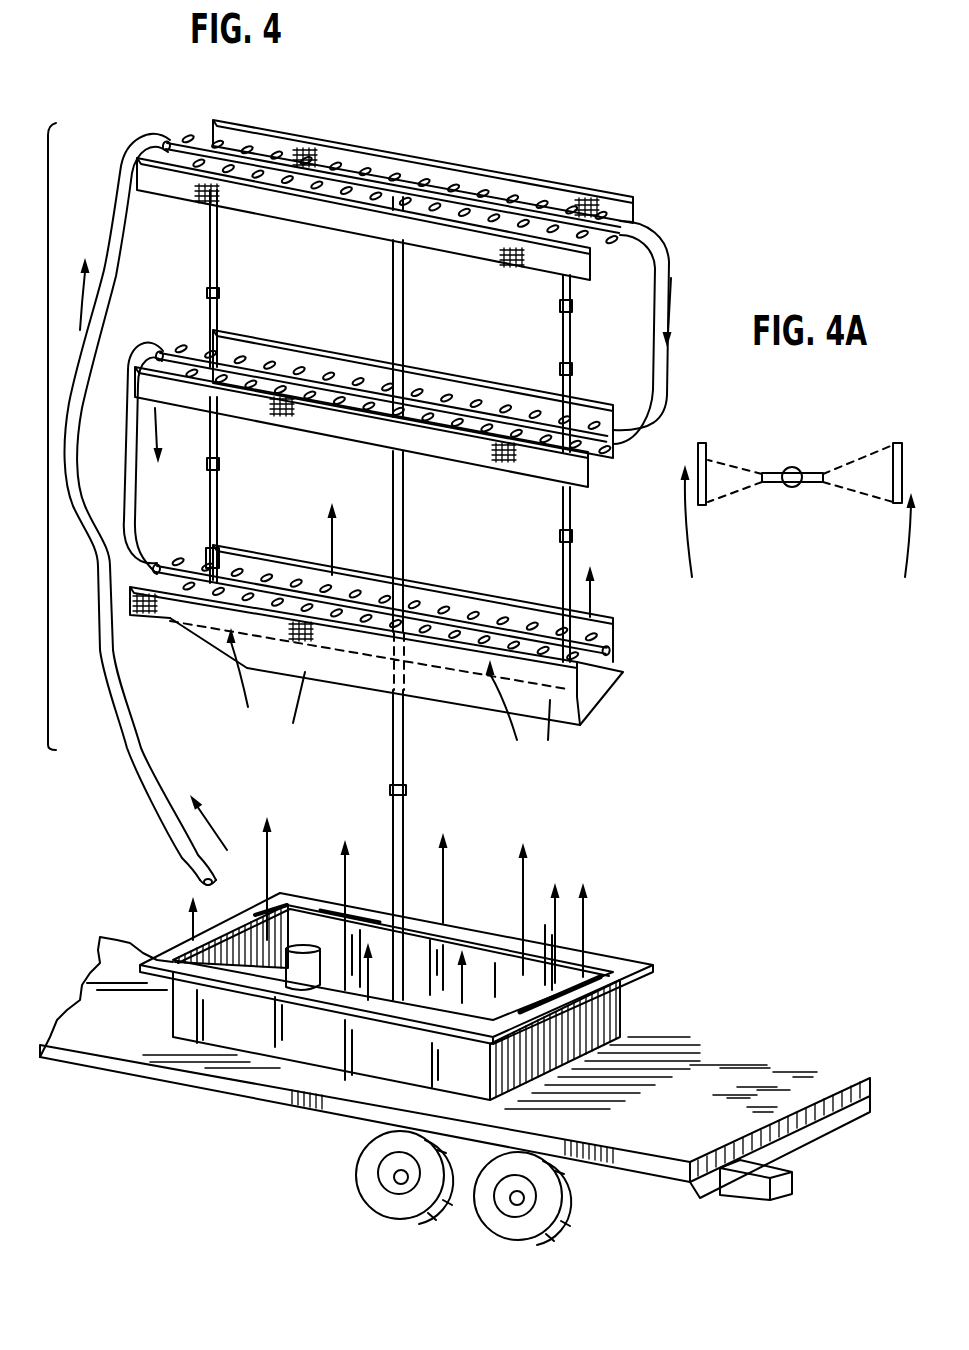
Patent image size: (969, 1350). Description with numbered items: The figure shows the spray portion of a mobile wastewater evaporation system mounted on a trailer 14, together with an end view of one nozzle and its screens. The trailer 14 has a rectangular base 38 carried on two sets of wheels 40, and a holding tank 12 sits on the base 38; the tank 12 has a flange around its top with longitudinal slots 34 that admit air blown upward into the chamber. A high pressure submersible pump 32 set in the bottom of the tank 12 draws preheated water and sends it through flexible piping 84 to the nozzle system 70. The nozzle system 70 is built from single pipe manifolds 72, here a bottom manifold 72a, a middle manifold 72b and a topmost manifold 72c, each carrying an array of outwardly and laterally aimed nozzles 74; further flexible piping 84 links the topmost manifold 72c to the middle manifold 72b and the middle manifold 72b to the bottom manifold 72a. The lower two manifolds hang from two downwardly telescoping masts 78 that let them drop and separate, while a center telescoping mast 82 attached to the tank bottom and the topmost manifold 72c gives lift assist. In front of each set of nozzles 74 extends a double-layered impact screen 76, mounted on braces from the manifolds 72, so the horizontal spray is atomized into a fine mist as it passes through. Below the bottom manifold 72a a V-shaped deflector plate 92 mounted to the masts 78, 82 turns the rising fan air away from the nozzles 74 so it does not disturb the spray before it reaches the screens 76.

In FIG. 4, the nozzle system 70 is at (48, 437).
In FIG. 4, the bottom manifold 72a is at (258, 582).
In FIG. 4, the middle manifold 72b is at (258, 366).
In FIG. 4, the topmost manifold 72c is at (270, 140).
In FIG. 4A, the single pipe manifold 72 is at (796, 468).
In FIG. 4A, the nozzles 74 is at (776, 484).
In FIG. 4, the impact screens 76 is at (590, 192).
In FIG. 4A, the impact screens 76 is at (698, 452).
In FIG. 4, the downwardly telescoping masts 78 is at (219, 270).
In FIG. 4, the center telescoping mast 82 is at (403, 500).
In FIG. 4, the flexible piping 84 is at (112, 168).
In FIG. 4, the V-shaped deflector plate 92 is at (600, 703).
In FIG. 4, the longitudinal slots 34 is at (585, 950).
In FIG. 4, the holding tank 12 is at (618, 1023).
In FIG. 4, the high pressure submersible pump 32 is at (300, 975).
In FIG. 4, the base 38 is at (703, 1057).
In FIG. 4, the trailer 14 is at (143, 1080).
In FIG. 4, the wheels 40 is at (562, 1212).